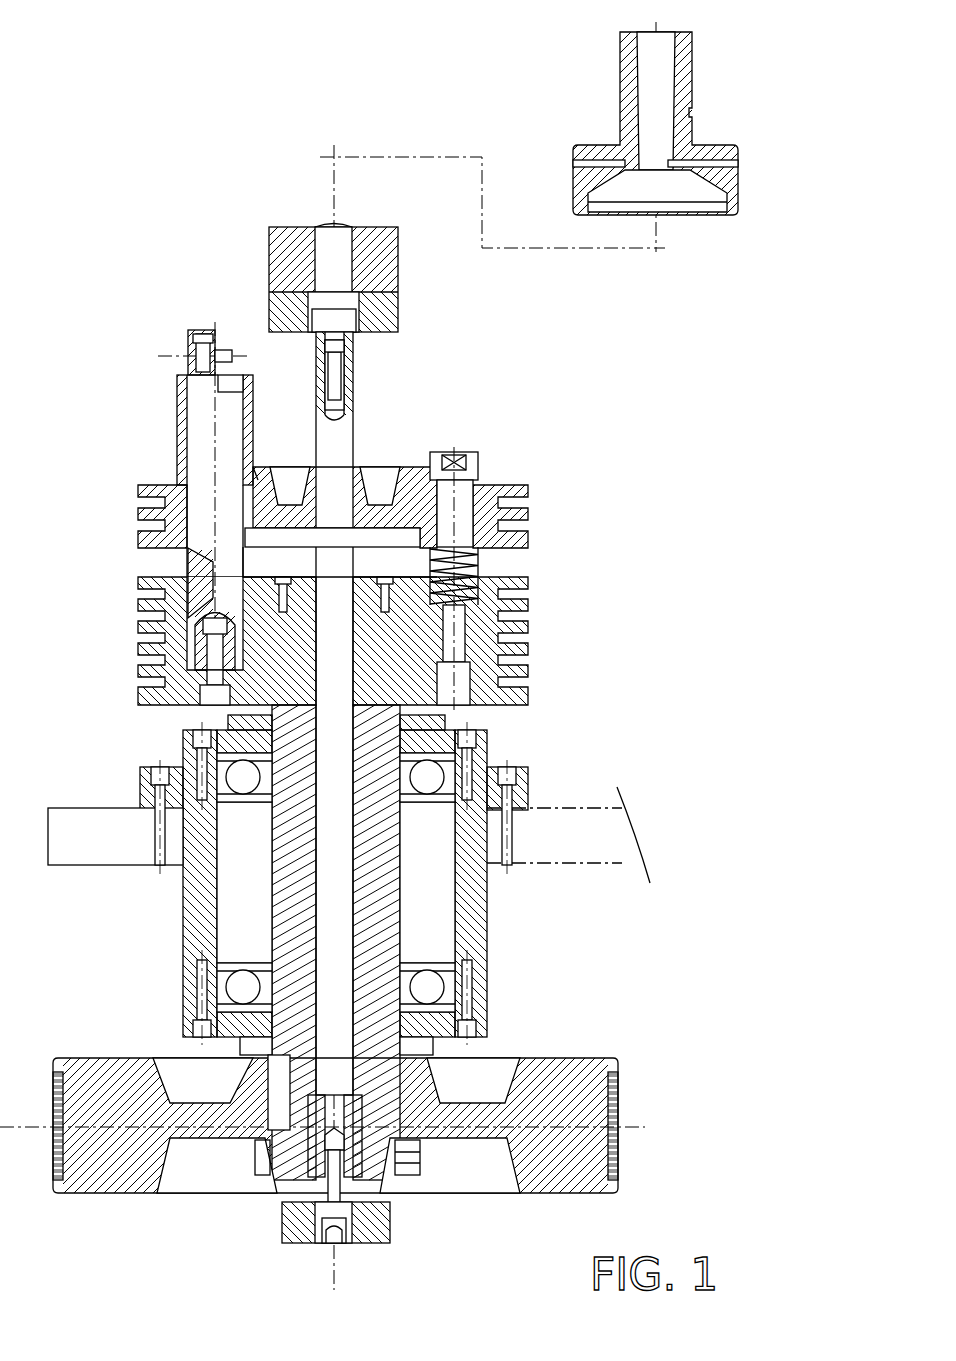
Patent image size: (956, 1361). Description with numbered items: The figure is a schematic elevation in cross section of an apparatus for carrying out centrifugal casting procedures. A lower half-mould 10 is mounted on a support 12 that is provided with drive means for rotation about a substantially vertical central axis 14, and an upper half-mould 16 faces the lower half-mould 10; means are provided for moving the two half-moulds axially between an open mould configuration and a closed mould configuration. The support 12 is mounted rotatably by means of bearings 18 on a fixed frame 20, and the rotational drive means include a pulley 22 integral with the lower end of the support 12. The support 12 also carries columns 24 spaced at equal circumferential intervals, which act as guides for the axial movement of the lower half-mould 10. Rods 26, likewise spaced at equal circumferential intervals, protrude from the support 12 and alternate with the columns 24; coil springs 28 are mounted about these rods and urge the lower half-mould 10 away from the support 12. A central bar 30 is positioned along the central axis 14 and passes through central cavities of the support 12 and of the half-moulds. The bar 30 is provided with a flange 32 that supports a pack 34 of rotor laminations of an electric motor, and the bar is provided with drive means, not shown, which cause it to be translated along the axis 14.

The lower half-mould 10 is at (386, 782).
The support 12 is at (530, 668).
The central axis 14 is at (340, 440).
The upper half-mould 16 is at (697, 104).
The bearings 18 is at (243, 778).
The fixed frame 20 is at (497, 1015).
The pulley 22 is at (620, 1092).
The columns 24 is at (188, 549).
The rods 26 is at (480, 468).
The coil springs 28 is at (480, 576).
The central bar 30 is at (352, 690).
The flange 32 is at (381, 463).
The pack of rotor laminations 34 is at (269, 256).